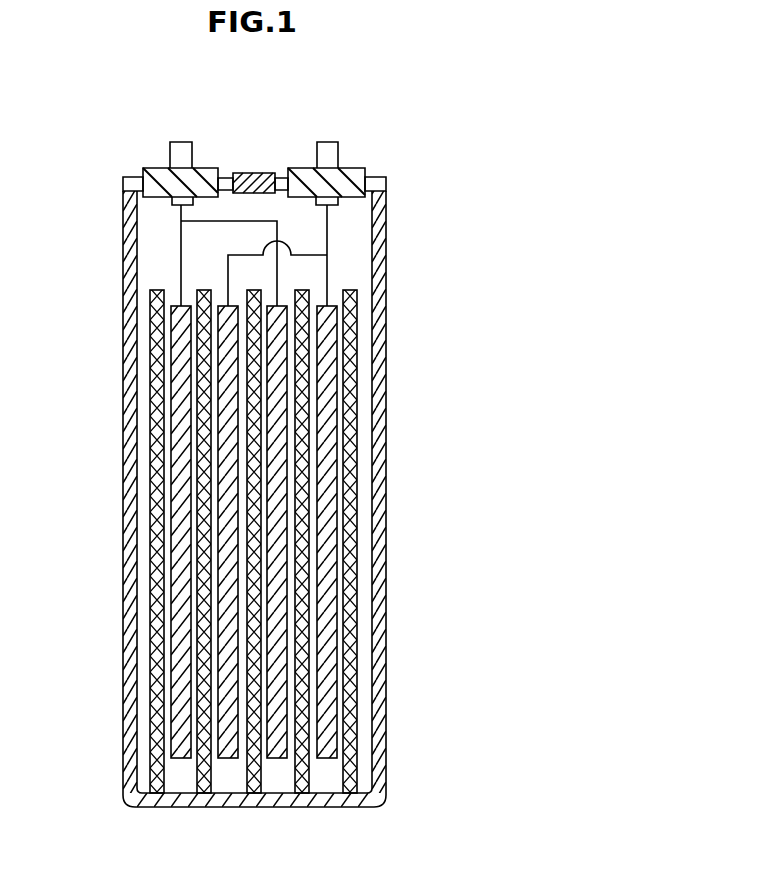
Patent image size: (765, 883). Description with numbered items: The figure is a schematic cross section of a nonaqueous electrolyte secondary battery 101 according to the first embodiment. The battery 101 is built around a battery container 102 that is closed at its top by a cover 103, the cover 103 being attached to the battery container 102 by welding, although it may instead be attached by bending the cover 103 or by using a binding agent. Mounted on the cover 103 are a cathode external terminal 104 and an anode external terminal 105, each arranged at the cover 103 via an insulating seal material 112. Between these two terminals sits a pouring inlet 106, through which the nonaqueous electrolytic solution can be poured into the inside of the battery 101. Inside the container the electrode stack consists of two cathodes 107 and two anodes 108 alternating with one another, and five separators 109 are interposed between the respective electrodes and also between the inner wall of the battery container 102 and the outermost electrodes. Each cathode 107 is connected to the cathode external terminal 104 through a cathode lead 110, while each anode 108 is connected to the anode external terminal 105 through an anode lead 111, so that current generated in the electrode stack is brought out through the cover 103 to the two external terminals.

The battery 101 is at (526, 92).
The battery container 102 is at (385, 433).
The cover 103 is at (128, 183).
The cathode external terminal 104 is at (182, 148).
The anode external terminal 105 is at (327, 148).
The pouring inlet 106 is at (253, 178).
The cathode 107 is at (283, 573).
The anode 108 is at (228, 682).
The separator 109 is at (204, 695).
The cathode lead 110 is at (180, 237).
The anode lead 111 is at (327, 238).
The insulating seal material 112 is at (160, 175).